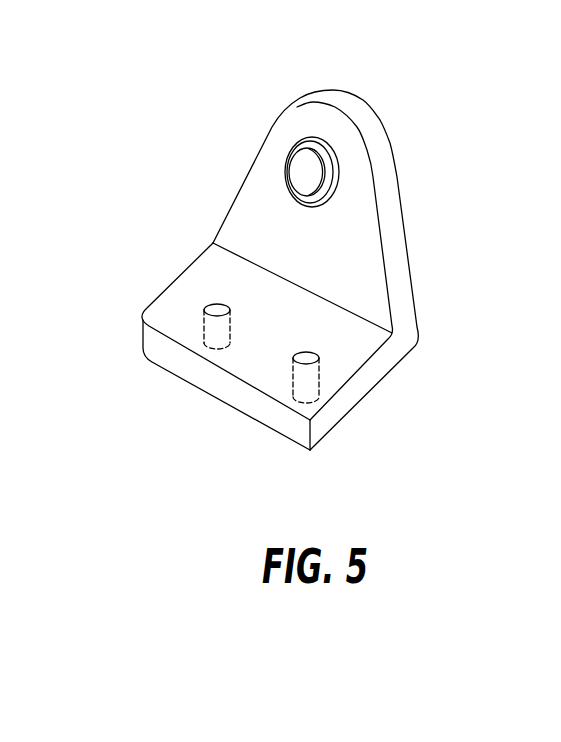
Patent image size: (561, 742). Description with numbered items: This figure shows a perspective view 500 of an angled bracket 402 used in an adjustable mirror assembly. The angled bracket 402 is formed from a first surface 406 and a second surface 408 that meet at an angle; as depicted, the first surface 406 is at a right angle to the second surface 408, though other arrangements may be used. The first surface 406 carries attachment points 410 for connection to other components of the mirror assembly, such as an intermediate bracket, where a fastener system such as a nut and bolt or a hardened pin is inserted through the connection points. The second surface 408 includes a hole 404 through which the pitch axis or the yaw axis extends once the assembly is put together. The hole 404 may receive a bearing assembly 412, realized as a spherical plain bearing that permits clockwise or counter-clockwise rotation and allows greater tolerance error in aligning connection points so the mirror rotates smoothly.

The perspective view 500 is at (165, 80).
The angled bracket 402 is at (145, 325).
The hole 404 is at (313, 177).
The first surface 406 is at (247, 372).
The second surface 408 is at (368, 255).
The attachment points 410 is at (215, 310).
The bearing assembly 412 is at (333, 155).